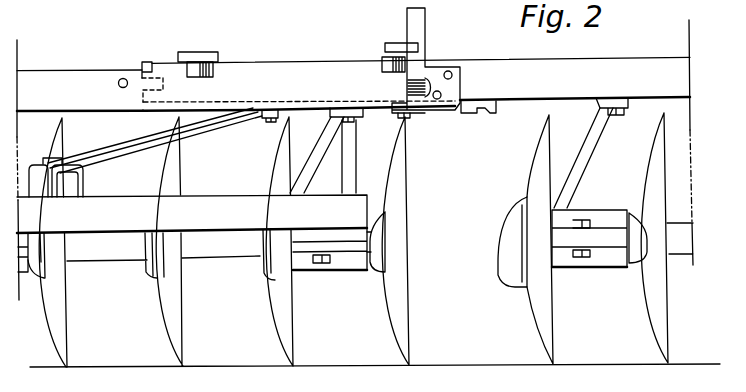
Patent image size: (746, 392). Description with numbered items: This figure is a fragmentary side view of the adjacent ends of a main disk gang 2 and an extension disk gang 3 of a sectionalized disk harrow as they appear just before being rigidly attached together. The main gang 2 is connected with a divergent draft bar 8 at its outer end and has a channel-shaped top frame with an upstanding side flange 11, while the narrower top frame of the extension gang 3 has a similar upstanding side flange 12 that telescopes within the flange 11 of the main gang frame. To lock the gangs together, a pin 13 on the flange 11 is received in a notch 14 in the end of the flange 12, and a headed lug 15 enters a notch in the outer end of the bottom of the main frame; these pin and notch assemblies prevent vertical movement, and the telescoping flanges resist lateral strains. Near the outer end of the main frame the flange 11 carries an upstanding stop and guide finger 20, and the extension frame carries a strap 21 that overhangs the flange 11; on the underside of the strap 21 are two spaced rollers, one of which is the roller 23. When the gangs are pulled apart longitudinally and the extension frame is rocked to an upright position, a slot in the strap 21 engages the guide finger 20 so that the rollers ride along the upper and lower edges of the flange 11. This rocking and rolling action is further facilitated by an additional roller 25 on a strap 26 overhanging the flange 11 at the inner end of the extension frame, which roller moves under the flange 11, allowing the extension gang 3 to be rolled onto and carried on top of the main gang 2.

The main disk gang 2 is at (339, 256).
The extension disk gang 3 is at (572, 249).
The divergent draft bar 8 is at (215, 218).
The upstanding side flange 11 is at (257, 85).
The upstanding side flange 12 is at (576, 72).
The pin 13 is at (122, 78).
The notch 14 is at (150, 62).
The headed lug 15 is at (478, 114).
The stop and guide finger 20 is at (417, 27).
The strap 21 is at (397, 43).
The roller 23 is at (382, 60).
The roller 25 is at (208, 62).
The strap 26 is at (188, 53).